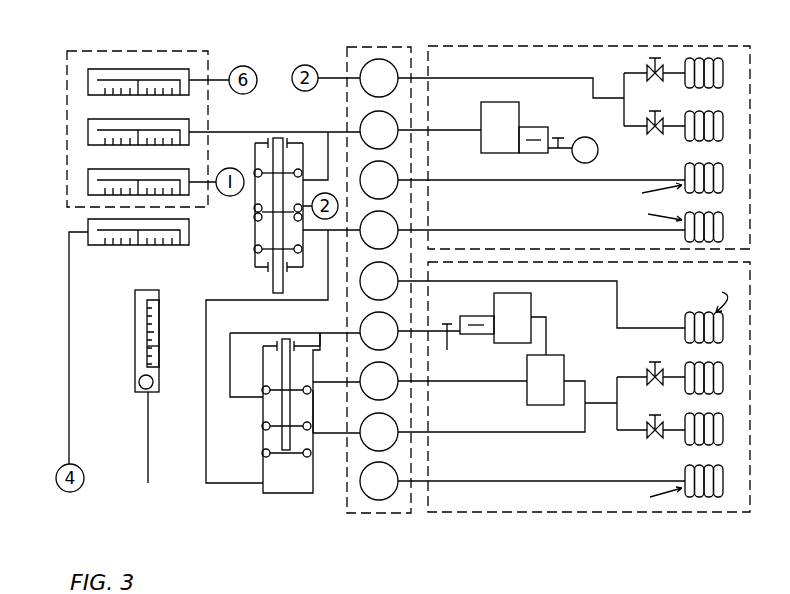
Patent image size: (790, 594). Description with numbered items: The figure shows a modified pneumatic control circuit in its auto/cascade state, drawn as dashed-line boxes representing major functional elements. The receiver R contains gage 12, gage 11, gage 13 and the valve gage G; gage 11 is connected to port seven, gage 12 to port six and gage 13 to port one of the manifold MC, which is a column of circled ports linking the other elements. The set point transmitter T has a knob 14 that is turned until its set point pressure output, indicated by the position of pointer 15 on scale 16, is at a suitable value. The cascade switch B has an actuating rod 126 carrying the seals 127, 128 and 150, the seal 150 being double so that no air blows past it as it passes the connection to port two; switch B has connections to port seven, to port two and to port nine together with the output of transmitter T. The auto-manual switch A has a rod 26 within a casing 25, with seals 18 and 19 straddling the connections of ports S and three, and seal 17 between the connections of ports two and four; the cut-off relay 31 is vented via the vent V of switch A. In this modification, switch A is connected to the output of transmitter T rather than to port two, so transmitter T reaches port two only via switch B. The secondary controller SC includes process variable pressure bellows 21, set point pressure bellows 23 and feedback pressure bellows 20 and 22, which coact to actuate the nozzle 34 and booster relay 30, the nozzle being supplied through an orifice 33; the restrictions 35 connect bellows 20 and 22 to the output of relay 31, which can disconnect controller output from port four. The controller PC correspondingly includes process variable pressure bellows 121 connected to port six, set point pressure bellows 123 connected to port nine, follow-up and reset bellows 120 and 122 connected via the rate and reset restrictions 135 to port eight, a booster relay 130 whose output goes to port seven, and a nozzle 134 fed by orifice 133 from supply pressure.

The gage 11 is at (190, 124).
The gage 12 is at (148, 69).
The gage 13 is at (88, 175).
The knob 14 is at (139, 382).
The pointer 15 is at (138, 342).
The scale 16 is at (153, 322).
The seal 17 is at (270, 453).
The seal 18 is at (268, 420).
The seal 19 is at (271, 381).
The feedback pressure bellows 20 is at (723, 378).
The process variable pressure bellows 21 is at (723, 328).
The feedback pressure bellows 22 is at (723, 429).
The set point pressure bellows 23 is at (723, 481).
The casing 25 is at (313, 398).
The rod 26 is at (283, 340).
The booster relay 30 is at (524, 327).
The cut-off relay 31 is at (556, 389).
The orifice 33 is at (446, 345).
The nozzle 34 is at (457, 311).
The restrictions 35 is at (650, 367).
The follow-up and reset bellows 120 is at (723, 126).
The process variable pressure bellows 121 is at (723, 178).
The follow-up and reset bellows 122 is at (723, 73).
The set point pressure bellows 123 is at (723, 227).
The actuating rod 126 is at (273, 286).
The seal 127 is at (264, 252).
The seal 128 is at (261, 165).
The booster relay 130 is at (512, 137).
The orifice 133 is at (558, 136).
The nozzle 134 is at (543, 115).
The rate and reset restrictions 135 is at (647, 66).
The double seal 150 is at (265, 219).
The auto-manual switch A is at (278, 433).
The cascade switch B is at (254, 218).
The valve gage G is at (118, 249).
The set point transmitter T is at (146, 288).
The vent V is at (321, 330).
The receiver R is at (90, 50).
The manifold MC is at (395, 522).
The primary controller PC is at (519, 47).
The slave or secondary controller SC is at (601, 520).